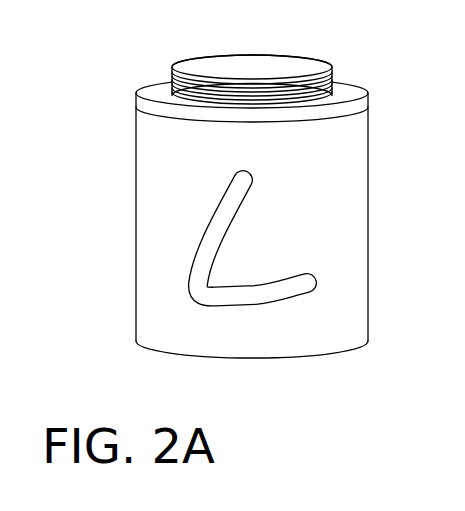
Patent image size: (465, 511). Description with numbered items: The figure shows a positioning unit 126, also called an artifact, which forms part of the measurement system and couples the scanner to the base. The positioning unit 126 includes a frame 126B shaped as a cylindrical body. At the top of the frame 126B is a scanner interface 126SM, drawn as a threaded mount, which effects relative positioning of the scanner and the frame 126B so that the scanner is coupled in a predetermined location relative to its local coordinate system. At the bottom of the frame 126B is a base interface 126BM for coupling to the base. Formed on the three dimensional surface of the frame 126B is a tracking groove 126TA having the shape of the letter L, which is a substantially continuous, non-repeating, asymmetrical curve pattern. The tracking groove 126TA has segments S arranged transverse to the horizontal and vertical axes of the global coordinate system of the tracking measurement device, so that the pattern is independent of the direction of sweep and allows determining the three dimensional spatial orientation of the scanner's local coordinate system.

The positioning unit 126 is at (241, 210).
The frame 126B is at (137, 270).
The scanner interface 126SM is at (252, 67).
The tracking groove 126TA is at (263, 297).
The base interface 126BM is at (253, 358).
The segment S is at (279, 250).